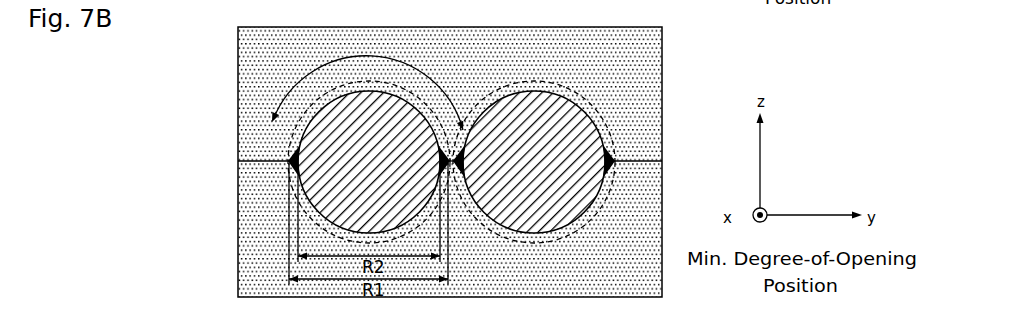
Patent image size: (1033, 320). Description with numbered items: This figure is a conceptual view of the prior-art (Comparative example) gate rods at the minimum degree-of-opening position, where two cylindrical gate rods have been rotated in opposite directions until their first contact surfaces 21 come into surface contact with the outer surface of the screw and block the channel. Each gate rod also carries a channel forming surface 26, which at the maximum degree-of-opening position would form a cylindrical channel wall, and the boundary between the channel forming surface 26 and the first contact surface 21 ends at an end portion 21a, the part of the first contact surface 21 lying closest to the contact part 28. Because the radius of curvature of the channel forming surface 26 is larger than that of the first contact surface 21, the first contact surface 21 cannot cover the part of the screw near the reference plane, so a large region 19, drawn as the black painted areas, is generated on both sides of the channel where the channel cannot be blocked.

The region where the channel cannot be blocked 19 is at (290, 153).
The first contact surface 21 is at (367, 84).
The end portion 21a is at (297, 147).
The channel forming surface 26 is at (352, 100).
The contact part 28 is at (256, 166).